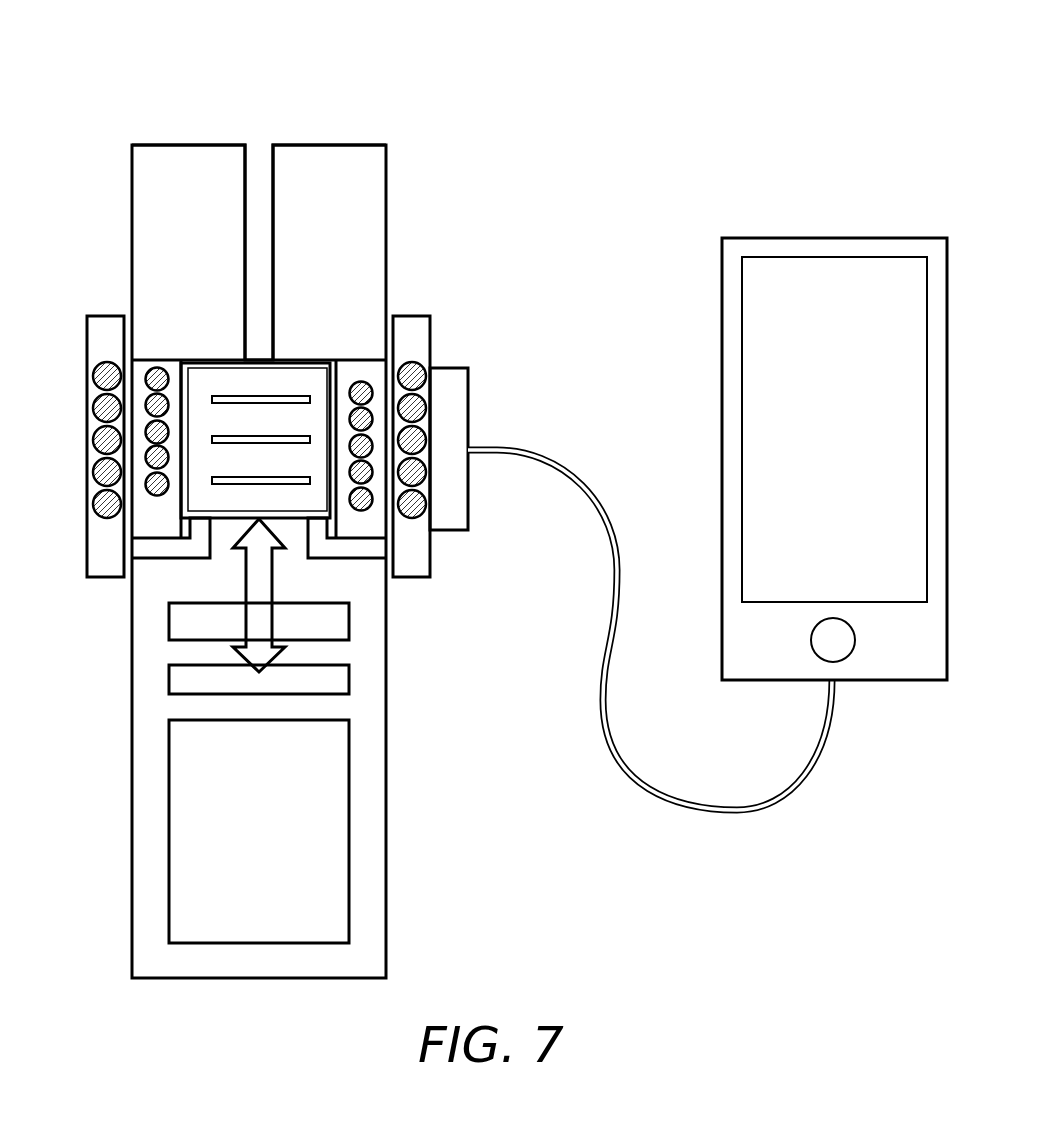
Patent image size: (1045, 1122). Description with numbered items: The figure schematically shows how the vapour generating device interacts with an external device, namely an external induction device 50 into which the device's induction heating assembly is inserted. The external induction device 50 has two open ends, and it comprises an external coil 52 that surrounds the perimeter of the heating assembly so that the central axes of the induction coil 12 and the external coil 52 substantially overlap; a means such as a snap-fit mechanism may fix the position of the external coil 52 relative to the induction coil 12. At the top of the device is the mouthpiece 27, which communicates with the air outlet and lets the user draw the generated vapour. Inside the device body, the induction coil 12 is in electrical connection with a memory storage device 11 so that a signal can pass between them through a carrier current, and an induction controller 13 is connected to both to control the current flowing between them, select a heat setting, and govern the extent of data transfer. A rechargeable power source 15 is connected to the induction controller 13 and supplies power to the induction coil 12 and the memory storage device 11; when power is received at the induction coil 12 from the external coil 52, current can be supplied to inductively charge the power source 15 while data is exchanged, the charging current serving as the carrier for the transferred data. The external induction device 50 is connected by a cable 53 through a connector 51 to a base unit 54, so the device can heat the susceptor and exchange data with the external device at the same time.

The external induction device 50 is at (152, 64).
The mouthpiece 27 is at (132, 157).
The induction coil 12 is at (150, 376).
The external coil 52 is at (94, 505).
The connector 51 is at (468, 378).
The cable 53 is at (581, 468).
The base unit 54 is at (921, 238).
The induction controller 13 is at (349, 618).
The memory storage device 11 is at (349, 676).
The rechargeable power source 15 is at (349, 732).